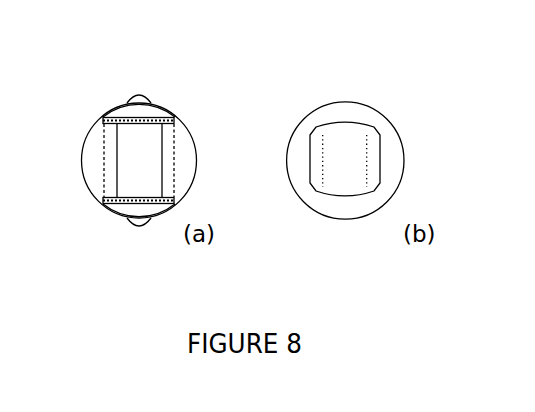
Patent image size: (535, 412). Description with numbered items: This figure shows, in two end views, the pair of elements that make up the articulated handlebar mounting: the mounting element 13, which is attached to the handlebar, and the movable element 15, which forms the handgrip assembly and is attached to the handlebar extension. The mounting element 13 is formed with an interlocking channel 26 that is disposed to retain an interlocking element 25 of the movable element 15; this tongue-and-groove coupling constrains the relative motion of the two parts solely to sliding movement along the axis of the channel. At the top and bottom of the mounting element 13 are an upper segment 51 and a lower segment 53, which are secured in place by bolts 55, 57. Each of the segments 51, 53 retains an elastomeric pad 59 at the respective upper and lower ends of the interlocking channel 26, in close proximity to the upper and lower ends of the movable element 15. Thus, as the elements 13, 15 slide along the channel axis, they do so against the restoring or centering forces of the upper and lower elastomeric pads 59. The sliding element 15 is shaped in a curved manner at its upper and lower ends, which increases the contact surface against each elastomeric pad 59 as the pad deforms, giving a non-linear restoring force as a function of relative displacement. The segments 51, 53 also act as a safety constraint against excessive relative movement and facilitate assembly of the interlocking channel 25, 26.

The mounting element 13 is at (188, 135).
The movable element 15 is at (392, 158).
The interlocking element 25 is at (317, 138).
The interlocking channel 26 is at (105, 137).
The upper segment 51 is at (120, 110).
The lower segment 53 is at (118, 212).
The bolt 55 is at (140, 100).
The bolt 57 is at (139, 224).
The elastomeric pad 59 is at (103, 118).